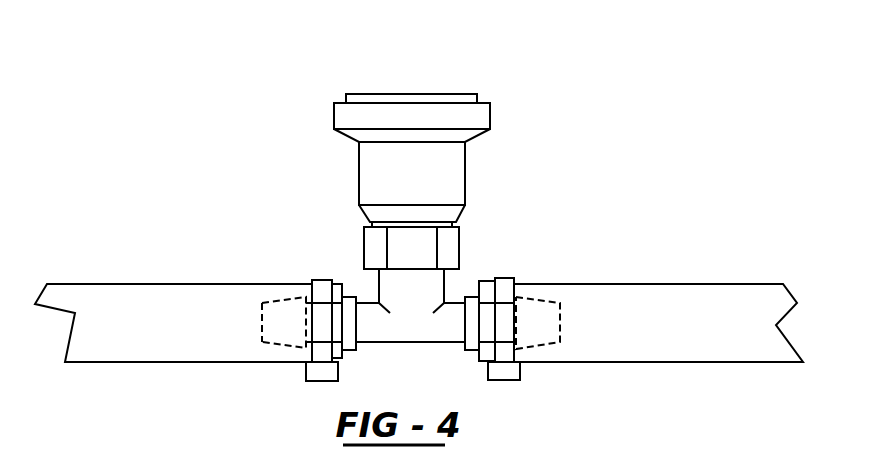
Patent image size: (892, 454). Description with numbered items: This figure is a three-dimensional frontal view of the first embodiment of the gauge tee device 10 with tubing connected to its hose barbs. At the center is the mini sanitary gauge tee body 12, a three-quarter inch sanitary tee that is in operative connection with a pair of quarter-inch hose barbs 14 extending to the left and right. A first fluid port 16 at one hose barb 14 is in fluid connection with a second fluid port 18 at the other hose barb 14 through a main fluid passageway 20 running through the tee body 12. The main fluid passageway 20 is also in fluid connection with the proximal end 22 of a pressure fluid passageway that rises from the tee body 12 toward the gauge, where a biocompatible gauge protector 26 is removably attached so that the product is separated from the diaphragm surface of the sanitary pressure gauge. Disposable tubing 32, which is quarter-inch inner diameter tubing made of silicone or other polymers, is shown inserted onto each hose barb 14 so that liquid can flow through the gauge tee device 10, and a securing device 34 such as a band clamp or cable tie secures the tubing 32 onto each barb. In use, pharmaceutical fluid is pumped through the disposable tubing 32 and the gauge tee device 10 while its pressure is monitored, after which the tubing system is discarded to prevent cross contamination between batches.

The gauge tee device 10 is at (471, 140).
The mini sanitary gauge tee body 12 is at (472, 165).
The hose barb 14 is at (278, 333).
The first fluid port 16 is at (260, 313).
The second fluid port 18 is at (562, 323).
The main fluid passageway 20 is at (260, 325).
The proximal end 22 is at (447, 297).
The biocompatible gauge protector 26 is at (482, 94).
The disposable tubing 32 is at (115, 297).
The securing device 34 is at (304, 370).